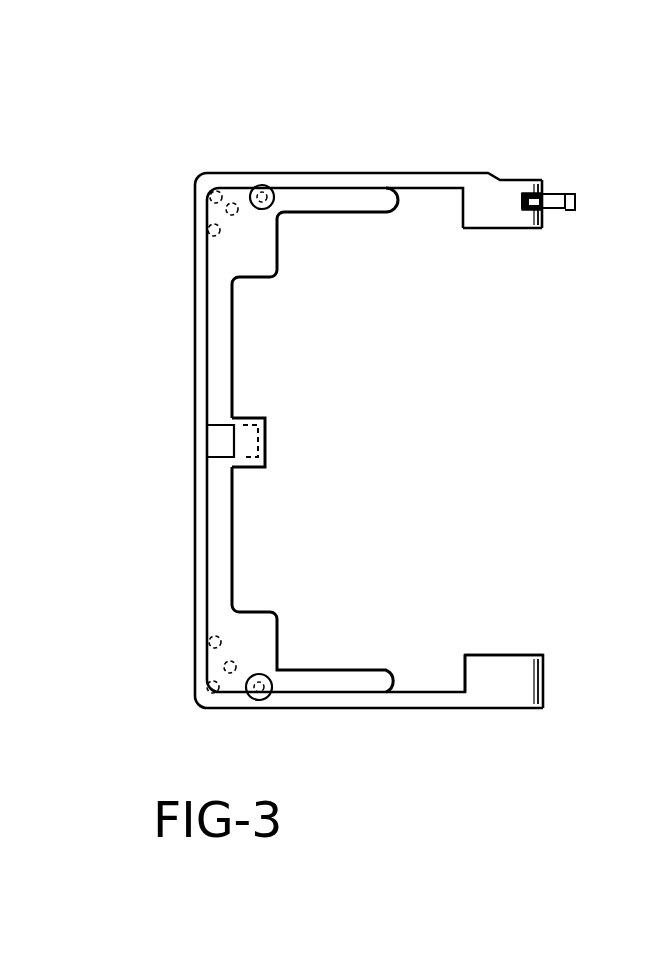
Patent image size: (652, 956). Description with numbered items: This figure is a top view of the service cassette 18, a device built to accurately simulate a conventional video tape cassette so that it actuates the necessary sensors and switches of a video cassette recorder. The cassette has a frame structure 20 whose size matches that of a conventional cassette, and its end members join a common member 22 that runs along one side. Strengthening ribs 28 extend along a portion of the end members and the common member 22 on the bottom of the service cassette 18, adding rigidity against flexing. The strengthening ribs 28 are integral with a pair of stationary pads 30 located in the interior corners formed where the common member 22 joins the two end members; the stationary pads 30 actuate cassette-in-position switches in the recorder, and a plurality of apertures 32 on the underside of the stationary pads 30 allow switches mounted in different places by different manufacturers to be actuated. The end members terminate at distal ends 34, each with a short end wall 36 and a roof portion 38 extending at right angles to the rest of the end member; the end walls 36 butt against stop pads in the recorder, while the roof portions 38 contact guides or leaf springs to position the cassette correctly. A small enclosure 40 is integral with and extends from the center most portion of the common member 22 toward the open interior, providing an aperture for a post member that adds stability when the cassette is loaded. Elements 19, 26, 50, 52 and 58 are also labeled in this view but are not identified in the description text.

The service cassette 18 is at (279, 143).
The lower flange 19 is at (455, 710).
The frame structure 20 is at (193, 578).
The common member 22 is at (372, 172).
The rib 26 is at (340, 206).
The strengthening ribs 28 is at (248, 262).
The stationary pads 30 is at (236, 197).
The apertures 32 is at (463, 238).
The distal ends 34 is at (543, 232).
The end wall 36 is at (490, 218).
The roof portion 38 is at (266, 443).
The enclosure 40 is at (218, 442).
The clip 50 is at (563, 195).
The clip fastener 52 is at (533, 201).
The clip end 58 is at (552, 218).